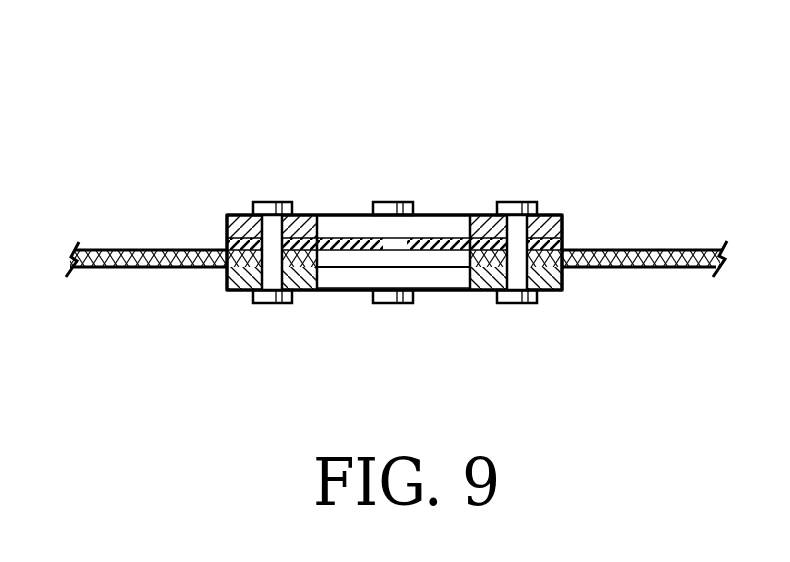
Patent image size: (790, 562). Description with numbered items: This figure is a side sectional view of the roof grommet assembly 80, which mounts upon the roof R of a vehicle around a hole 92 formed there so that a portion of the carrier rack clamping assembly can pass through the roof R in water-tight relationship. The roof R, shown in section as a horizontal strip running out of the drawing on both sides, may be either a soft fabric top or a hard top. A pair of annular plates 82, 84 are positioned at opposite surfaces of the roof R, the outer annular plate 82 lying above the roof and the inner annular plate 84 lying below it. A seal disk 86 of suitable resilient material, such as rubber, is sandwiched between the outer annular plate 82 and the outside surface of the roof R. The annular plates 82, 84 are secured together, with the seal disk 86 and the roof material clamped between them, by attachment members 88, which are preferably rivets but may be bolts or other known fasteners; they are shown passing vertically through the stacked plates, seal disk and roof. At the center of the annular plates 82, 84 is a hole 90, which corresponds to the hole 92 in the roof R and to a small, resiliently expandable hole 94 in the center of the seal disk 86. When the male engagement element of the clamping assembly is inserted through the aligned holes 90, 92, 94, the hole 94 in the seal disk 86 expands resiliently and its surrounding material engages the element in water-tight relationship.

The roof grommet assembly 80 is at (506, 112).
The outer annular plate 82 is at (550, 240).
The inner annular plate 84 is at (553, 278).
The seal disk 86 is at (563, 246).
The attachment members 88 is at (392, 202).
The hole 90 is at (446, 290).
The hole 92 is at (346, 268).
The resiliently expandable hole 94 is at (395, 242).
The roof R is at (138, 258).